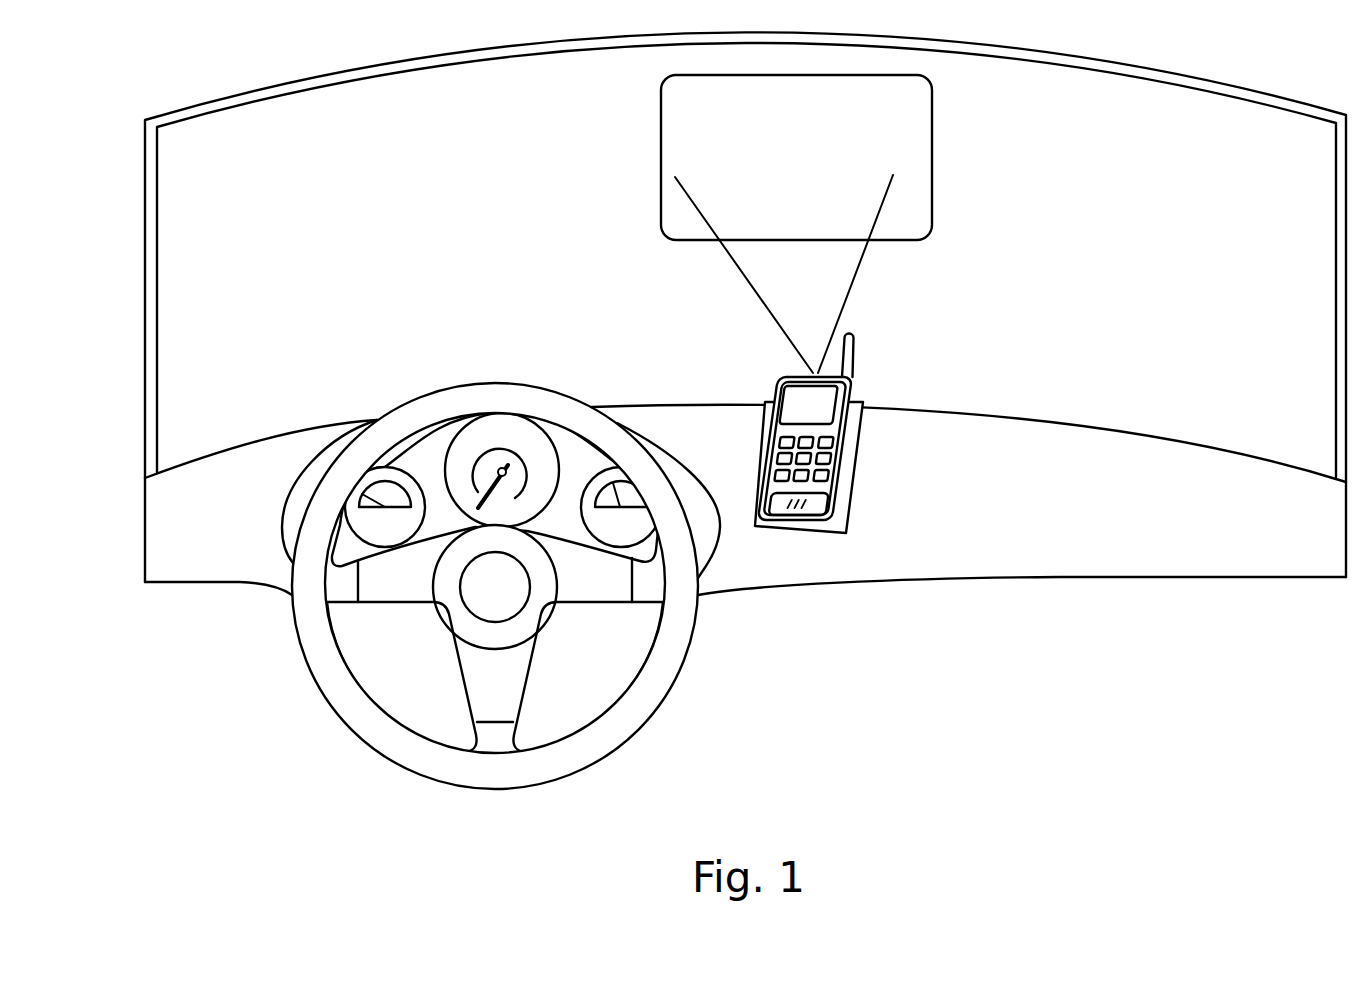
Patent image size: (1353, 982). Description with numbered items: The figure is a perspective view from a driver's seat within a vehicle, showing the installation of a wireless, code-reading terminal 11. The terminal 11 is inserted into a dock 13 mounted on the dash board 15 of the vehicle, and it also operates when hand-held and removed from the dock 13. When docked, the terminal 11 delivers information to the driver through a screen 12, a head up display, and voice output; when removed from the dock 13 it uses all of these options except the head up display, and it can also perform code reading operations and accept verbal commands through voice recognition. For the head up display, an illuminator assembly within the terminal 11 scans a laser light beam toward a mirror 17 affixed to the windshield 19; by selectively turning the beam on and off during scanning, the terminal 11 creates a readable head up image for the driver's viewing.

The terminal 11 is at (849, 379).
The screen 12 is at (793, 400).
The dock 13 is at (860, 462).
The dash board 15 is at (1075, 577).
The mirror 17 is at (932, 132).
The windshield 19 is at (373, 70).